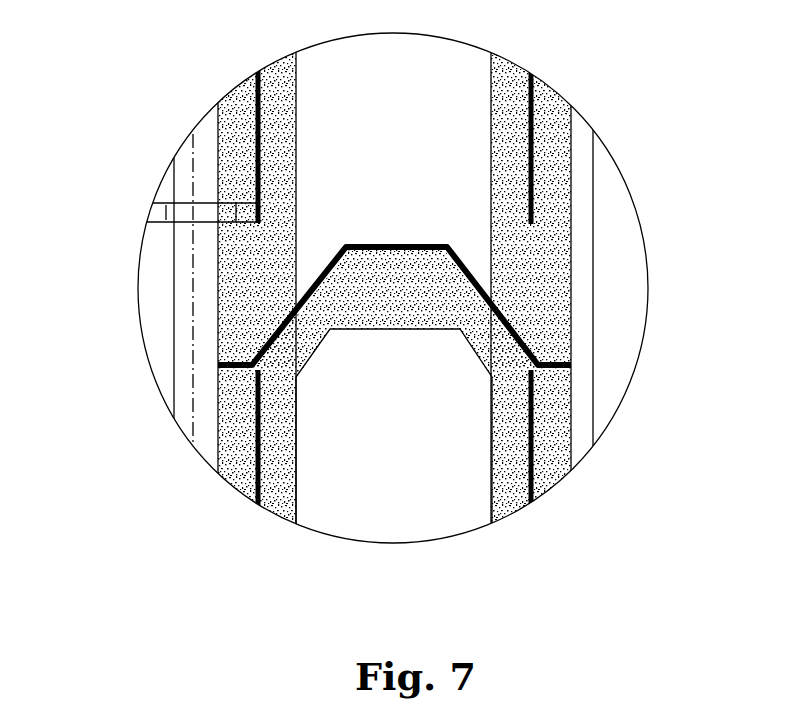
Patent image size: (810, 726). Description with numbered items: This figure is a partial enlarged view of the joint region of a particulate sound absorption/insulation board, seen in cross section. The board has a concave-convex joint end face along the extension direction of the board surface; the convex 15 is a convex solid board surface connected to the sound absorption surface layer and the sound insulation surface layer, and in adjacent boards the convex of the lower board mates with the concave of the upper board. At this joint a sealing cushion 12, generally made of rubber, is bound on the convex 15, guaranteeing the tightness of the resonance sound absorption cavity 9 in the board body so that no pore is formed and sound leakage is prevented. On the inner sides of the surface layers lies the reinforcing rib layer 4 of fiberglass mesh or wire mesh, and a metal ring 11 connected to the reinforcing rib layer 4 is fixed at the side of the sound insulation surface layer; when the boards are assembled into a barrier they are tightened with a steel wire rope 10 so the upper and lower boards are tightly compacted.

The reinforcing rib layer 4 is at (533, 183).
The resonance sound absorption cavity 9 is at (440, 515).
The steel wire rope 10 is at (187, 277).
The metal ring 11 is at (150, 222).
The sealing cushion 12 is at (572, 363).
The convex 15 is at (388, 277).